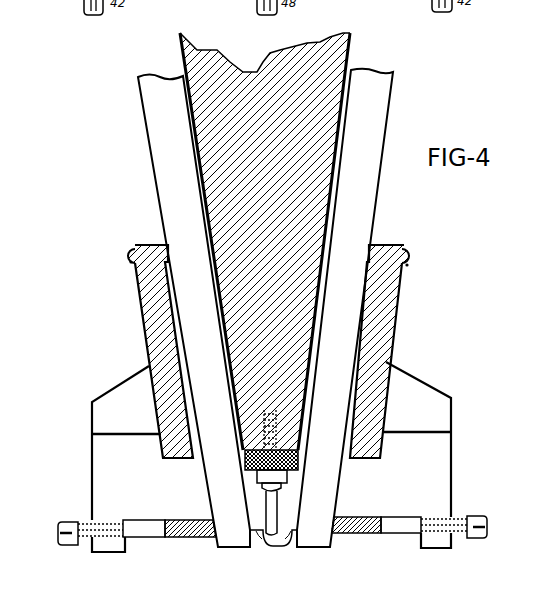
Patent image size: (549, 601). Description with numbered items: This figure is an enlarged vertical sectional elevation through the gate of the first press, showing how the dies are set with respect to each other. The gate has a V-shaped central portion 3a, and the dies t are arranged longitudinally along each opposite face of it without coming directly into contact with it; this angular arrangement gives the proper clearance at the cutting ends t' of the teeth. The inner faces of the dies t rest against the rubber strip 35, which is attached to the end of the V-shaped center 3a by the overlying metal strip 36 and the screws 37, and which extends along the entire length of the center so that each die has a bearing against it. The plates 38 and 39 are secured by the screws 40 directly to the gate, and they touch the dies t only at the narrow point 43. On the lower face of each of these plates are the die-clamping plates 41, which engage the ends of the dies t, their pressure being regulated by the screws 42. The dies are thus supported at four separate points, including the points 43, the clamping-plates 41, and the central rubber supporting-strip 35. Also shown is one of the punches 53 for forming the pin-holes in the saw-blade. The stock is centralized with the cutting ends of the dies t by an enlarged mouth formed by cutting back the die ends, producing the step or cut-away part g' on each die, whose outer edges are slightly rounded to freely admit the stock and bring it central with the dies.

The V-shaped central portion 3a is at (285, 51).
The dies t is at (265, 308).
The cutting ends of the teeth t' is at (273, 543).
The step or cut-away part g' is at (272, 550).
The plate 39 is at (141, 305).
The plate 38 is at (398, 327).
The screws 40 is at (128, 268).
The narrow point 43 is at (168, 250).
The rubber strip 35 is at (247, 455).
The overlying metal strip 36 is at (288, 476).
The screws 37 is at (281, 488).
The punches 53 is at (278, 513).
The die-clamping plates 41 is at (272, 527).
The screws 42 is at (58, 537).